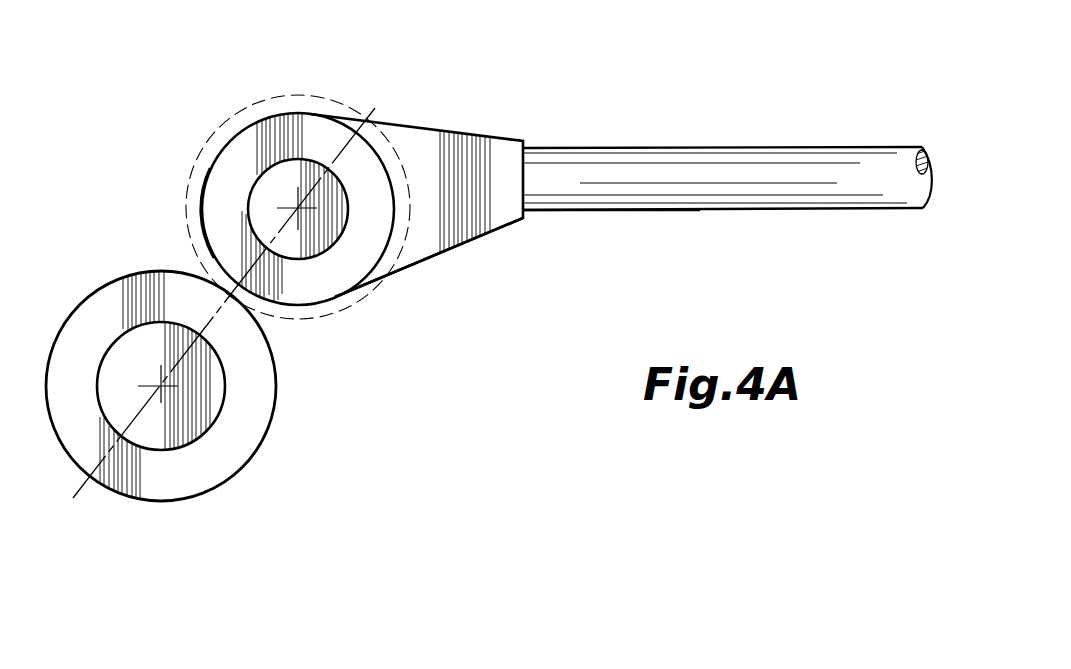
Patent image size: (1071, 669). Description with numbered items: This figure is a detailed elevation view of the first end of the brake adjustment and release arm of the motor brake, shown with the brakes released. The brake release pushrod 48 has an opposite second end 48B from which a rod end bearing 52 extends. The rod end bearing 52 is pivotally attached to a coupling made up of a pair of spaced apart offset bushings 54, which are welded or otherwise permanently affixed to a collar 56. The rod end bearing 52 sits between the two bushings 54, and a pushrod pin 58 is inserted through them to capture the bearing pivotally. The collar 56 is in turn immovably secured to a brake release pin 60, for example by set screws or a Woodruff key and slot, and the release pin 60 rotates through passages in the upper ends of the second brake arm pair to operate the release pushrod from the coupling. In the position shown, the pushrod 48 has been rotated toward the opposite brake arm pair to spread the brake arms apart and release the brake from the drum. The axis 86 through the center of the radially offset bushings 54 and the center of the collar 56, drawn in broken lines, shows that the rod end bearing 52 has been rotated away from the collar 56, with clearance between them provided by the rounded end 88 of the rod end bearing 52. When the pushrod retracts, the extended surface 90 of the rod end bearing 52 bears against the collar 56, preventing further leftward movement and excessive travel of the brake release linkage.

The brake release pushrod 48 is at (872, 208).
The second end of the pushrod 48B is at (570, 210).
The rod end bearing 52 is at (301, 221).
The offset bushings 54 is at (218, 130).
The collar 56 is at (199, 432).
The pushrod pin 58 is at (332, 247).
The brake release pin 60 is at (223, 407).
The axis 86 is at (343, 117).
The rounded end of the rod end bearing 88 is at (203, 222).
The extended surface of the rod end bearing 90 is at (372, 285).